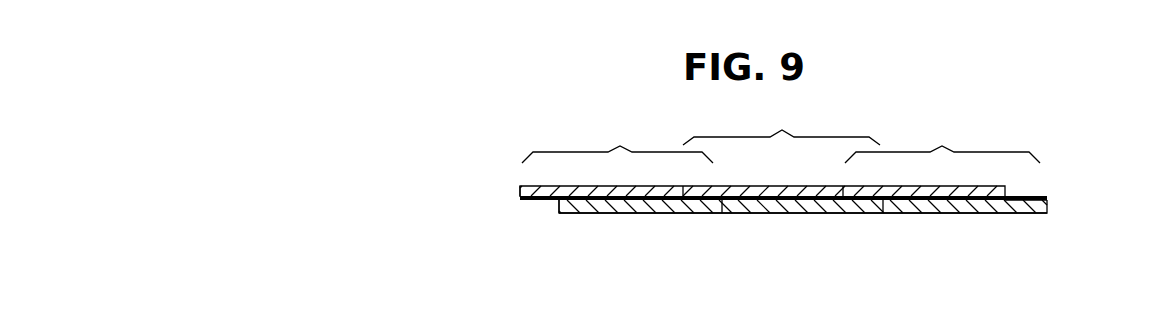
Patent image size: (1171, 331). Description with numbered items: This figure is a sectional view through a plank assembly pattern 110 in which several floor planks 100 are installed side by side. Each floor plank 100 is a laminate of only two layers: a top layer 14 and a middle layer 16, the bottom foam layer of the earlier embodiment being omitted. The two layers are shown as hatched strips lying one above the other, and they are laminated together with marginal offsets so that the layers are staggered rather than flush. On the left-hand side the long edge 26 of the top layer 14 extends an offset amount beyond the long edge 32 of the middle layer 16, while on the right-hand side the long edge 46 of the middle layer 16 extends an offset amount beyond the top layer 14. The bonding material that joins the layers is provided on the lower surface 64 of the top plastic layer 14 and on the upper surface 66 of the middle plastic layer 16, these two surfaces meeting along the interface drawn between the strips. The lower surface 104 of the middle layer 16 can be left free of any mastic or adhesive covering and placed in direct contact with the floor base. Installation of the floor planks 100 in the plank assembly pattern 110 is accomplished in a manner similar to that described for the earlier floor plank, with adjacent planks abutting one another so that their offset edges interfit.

The plank assembly pattern 110 is at (1052, 91).
The long edge of the top layer 26 is at (520, 190).
The top layer 14 is at (562, 185).
The lower surface of the top plastic layer 64 is at (527, 201).
The middle layer 16 is at (1049, 202).
The lower surface of the middle layer 104 is at (620, 214).
The long edge of the middle layer 32 is at (558, 213).
The upper surface of the middle plastic layer 66 is at (1035, 197).
The long edge of the middle layer 46 is at (1048, 208).
The floor plank 100 is at (781, 133).